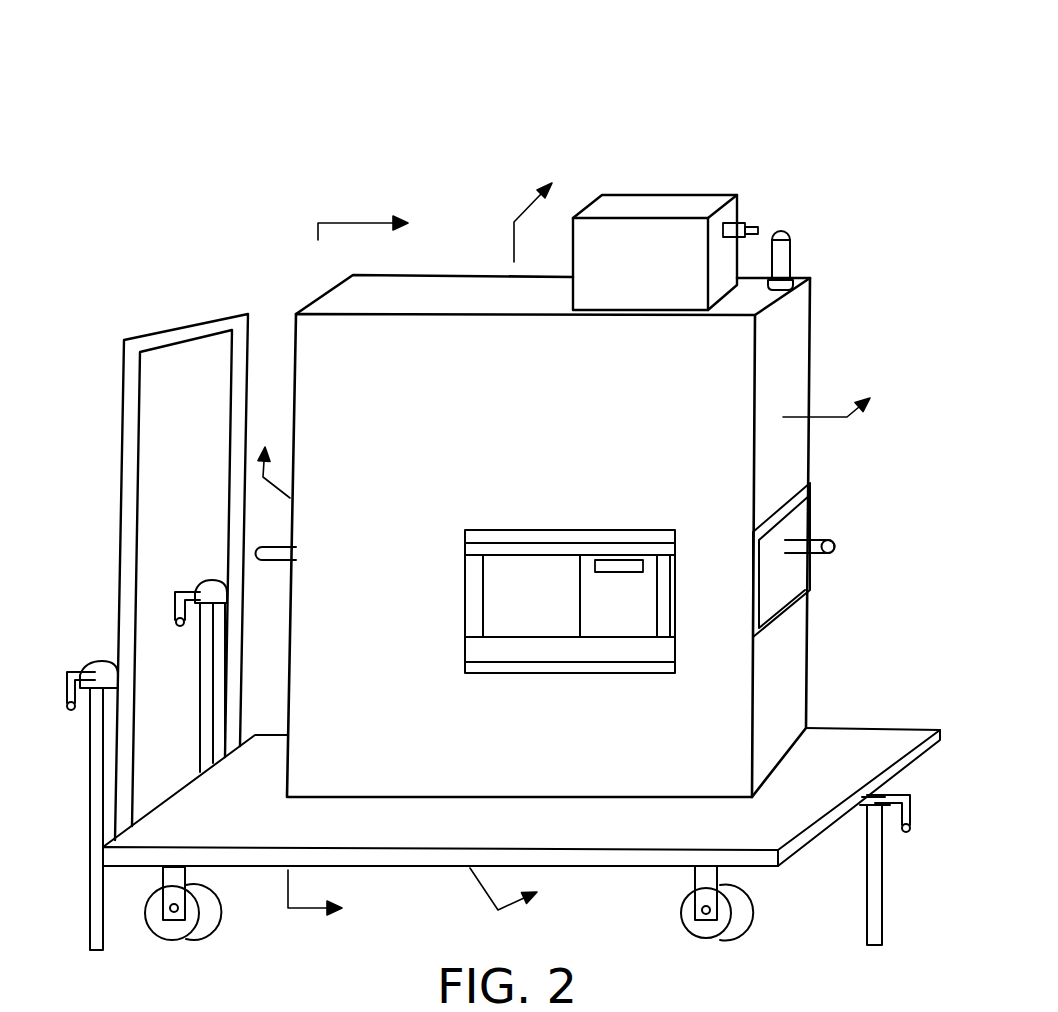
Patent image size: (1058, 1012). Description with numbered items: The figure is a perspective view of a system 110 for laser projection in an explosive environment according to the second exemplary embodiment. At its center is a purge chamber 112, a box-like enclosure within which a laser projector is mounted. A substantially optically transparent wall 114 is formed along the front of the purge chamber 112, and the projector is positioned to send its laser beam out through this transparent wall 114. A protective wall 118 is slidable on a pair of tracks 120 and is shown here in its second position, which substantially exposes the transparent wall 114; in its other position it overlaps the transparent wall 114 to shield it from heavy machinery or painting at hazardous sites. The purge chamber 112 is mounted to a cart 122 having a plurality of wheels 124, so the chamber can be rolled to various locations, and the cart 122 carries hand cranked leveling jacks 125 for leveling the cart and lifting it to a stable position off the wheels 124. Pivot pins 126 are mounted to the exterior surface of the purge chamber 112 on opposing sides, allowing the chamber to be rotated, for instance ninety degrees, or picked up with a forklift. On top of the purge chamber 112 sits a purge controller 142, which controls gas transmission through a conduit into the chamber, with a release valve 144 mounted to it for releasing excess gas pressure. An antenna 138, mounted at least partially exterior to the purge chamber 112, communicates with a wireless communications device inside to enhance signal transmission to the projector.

The system for laser projection in an explosive environment 110 is at (489, 502).
The purge chamber 112 is at (360, 765).
The substantially optically transparent wall 114 is at (502, 590).
The protective wall 118 is at (657, 590).
The tracks 120 is at (528, 542).
The cart 122 is at (195, 322).
The wheels 124 is at (213, 923).
The legs 125 is at (198, 667).
The pivot pin 126 is at (262, 549).
The antenna 138 is at (790, 237).
The purge controller 142 is at (632, 235).
The release valve 144 is at (742, 222).